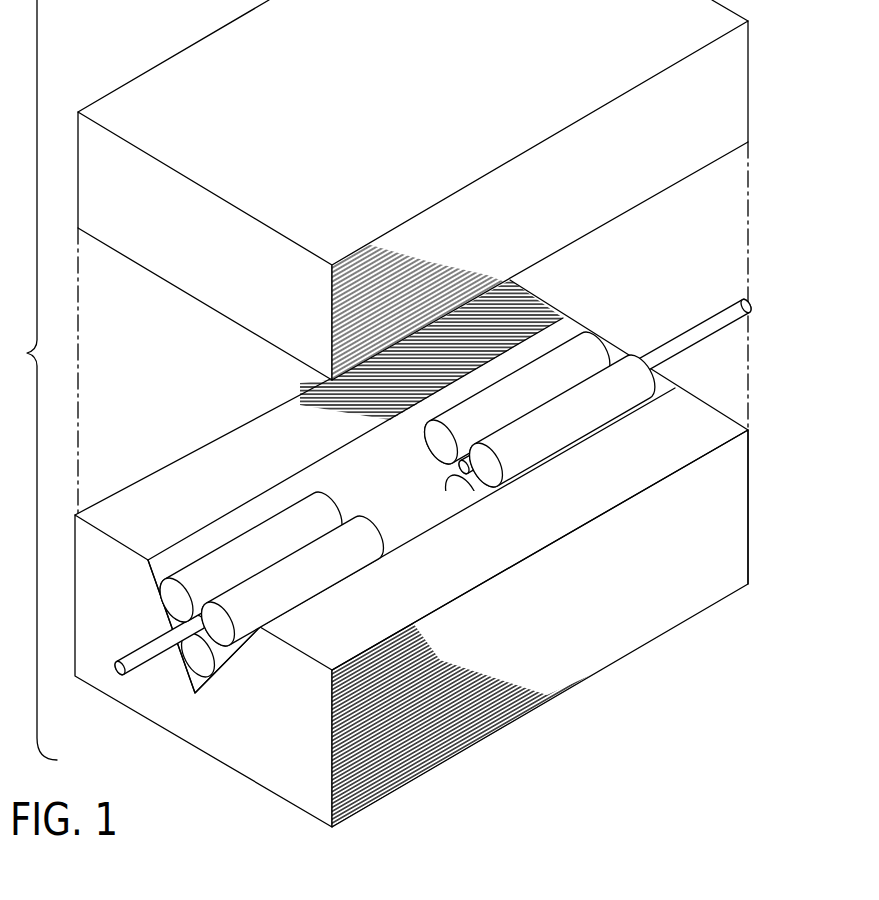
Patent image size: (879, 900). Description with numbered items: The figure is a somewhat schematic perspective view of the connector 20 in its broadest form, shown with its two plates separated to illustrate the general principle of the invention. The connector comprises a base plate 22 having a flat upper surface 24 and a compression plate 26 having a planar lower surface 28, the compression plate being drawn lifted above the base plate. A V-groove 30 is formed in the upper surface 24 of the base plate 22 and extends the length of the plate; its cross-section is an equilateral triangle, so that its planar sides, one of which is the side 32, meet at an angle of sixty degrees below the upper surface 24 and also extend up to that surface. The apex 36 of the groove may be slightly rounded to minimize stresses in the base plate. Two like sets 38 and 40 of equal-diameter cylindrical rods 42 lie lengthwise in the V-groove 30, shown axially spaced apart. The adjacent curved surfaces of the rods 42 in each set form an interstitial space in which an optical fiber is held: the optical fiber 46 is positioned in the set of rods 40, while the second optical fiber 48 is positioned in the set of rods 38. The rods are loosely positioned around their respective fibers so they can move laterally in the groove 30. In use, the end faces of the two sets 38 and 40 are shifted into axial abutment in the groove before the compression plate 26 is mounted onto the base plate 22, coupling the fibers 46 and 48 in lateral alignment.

The connector 20 is at (444, 553).
The base plate 22 is at (458, 728).
The upper surface 24 is at (718, 434).
The compression plate 26 is at (450, 257).
The lower surface 28 is at (240, 328).
The V-groove 30 is at (334, 479).
The planar side 32 is at (356, 463).
The apex 36 is at (195, 693).
The set of rods 38 is at (219, 630).
The set of rods 40 is at (613, 388).
The cylindrical rods 42 is at (431, 516).
The optical fiber 46 is at (715, 337).
The optical fiber 48 is at (137, 677).